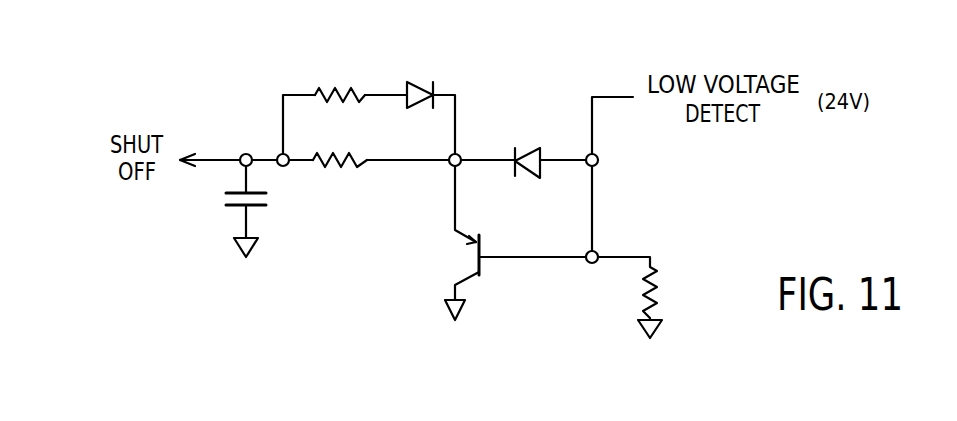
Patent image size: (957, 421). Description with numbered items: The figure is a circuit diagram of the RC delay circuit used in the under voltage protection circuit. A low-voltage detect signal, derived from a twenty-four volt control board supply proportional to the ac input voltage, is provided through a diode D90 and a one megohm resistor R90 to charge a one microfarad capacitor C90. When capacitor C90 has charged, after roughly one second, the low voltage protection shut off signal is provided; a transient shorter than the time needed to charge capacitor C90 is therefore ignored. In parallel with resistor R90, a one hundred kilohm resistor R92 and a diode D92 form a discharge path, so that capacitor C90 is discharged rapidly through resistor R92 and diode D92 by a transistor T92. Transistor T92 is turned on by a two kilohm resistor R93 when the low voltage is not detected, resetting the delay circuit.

The resistor R92 is at (338, 88).
The diode D92 is at (412, 84).
The resistor R90 is at (325, 165).
The diode D90 is at (528, 148).
The capacitor C90 is at (266, 208).
The transistor T92 is at (482, 247).
The resistor R93 is at (656, 272).